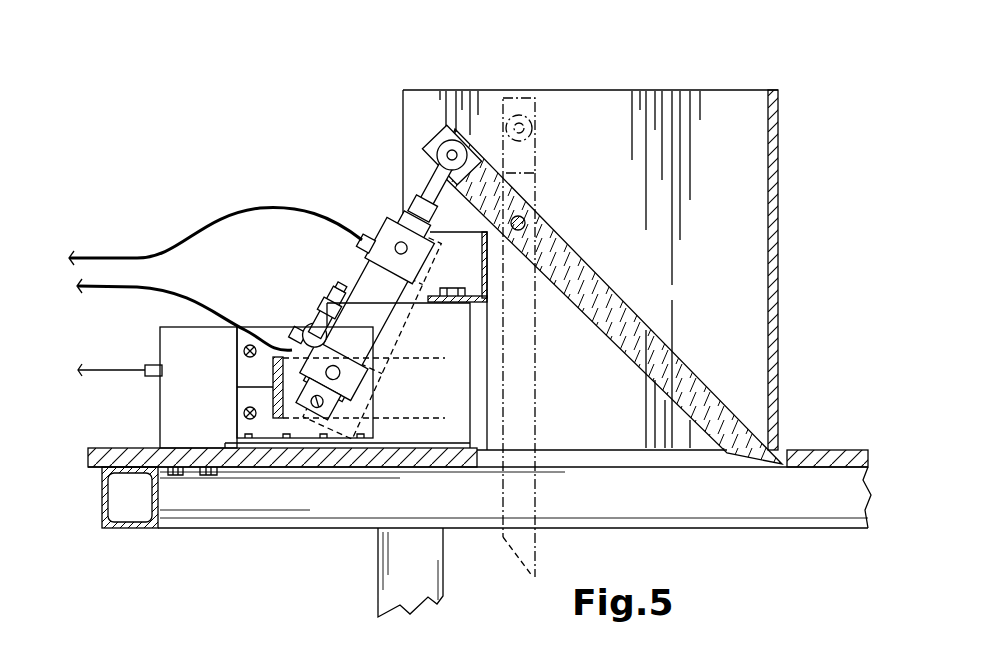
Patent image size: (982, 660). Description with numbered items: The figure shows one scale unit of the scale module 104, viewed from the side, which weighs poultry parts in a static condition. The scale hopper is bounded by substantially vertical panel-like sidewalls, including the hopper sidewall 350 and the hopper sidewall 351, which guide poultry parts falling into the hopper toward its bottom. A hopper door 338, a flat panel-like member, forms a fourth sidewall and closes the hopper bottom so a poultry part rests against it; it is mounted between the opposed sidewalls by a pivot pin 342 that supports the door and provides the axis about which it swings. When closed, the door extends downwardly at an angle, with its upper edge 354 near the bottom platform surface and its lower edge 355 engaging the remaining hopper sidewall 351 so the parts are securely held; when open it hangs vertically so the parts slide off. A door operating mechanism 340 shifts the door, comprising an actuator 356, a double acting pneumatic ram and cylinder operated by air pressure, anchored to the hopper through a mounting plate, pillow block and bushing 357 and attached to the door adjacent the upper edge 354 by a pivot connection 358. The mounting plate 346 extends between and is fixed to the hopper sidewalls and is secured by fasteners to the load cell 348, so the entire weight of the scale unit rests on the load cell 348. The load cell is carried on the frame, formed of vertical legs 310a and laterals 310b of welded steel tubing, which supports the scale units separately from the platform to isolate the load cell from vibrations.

The scale module 104 is at (268, 118).
The vertical legs 310a is at (400, 566).
The laterals 310b is at (651, 500).
The hopper door 338 is at (647, 322).
The door operating mechanism 340 is at (366, 228).
The pivot pin 342 is at (447, 157).
The mounting plate 346 is at (560, 256).
The load cell 348 is at (180, 418).
The hopper sidewall 350 is at (578, 147).
The hopper sidewall 351 is at (776, 208).
The upper edge 354 is at (426, 122).
The lower edge 355 is at (781, 452).
The actuator 356 is at (378, 280).
The mounting plate, pillow block and bushing 357 is at (290, 392).
The pivot connection 358 is at (458, 140).